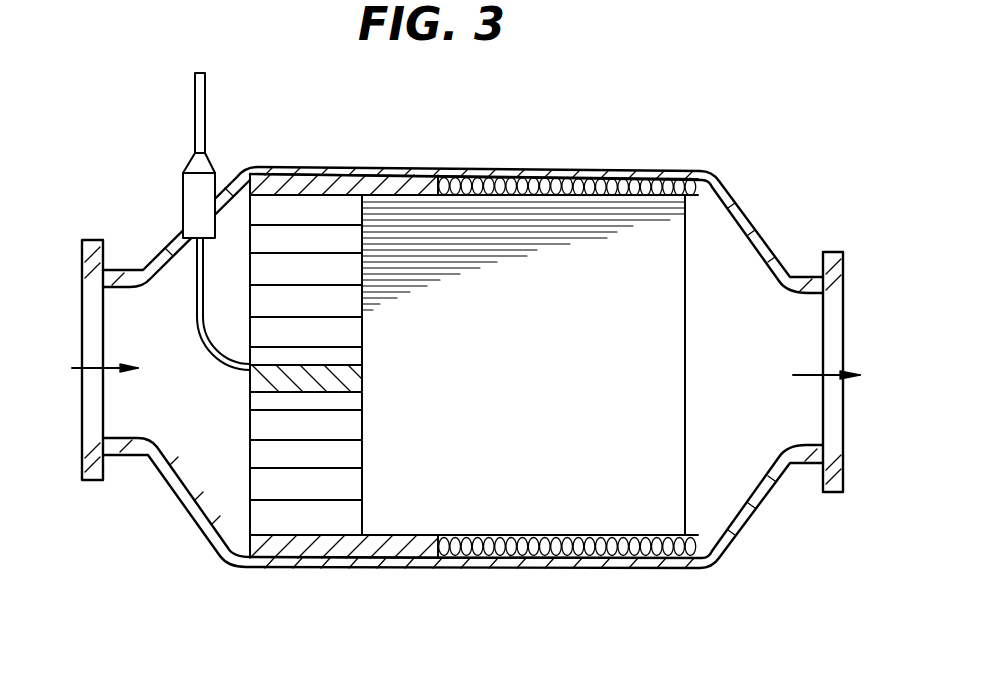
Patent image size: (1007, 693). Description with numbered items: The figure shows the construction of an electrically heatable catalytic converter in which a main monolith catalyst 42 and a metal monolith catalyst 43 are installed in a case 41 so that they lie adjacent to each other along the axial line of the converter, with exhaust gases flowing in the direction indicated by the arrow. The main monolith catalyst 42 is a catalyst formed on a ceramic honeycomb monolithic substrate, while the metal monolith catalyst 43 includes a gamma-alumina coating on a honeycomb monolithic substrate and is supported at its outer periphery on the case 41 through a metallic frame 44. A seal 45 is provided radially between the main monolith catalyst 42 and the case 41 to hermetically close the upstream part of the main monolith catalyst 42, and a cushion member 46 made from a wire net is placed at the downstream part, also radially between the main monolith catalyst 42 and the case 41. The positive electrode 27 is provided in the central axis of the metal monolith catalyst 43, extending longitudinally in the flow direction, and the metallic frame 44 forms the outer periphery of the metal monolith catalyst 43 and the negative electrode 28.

The positive electrode 27 is at (248, 389).
The negative electrode 28 is at (260, 548).
The case 41 is at (730, 188).
The main monolith catalyst 42 is at (508, 521).
The metal monolith catalyst 43 is at (347, 517).
The metallic frame 44 is at (318, 167).
The seal 45 is at (408, 182).
The cushion member 46 is at (550, 178).